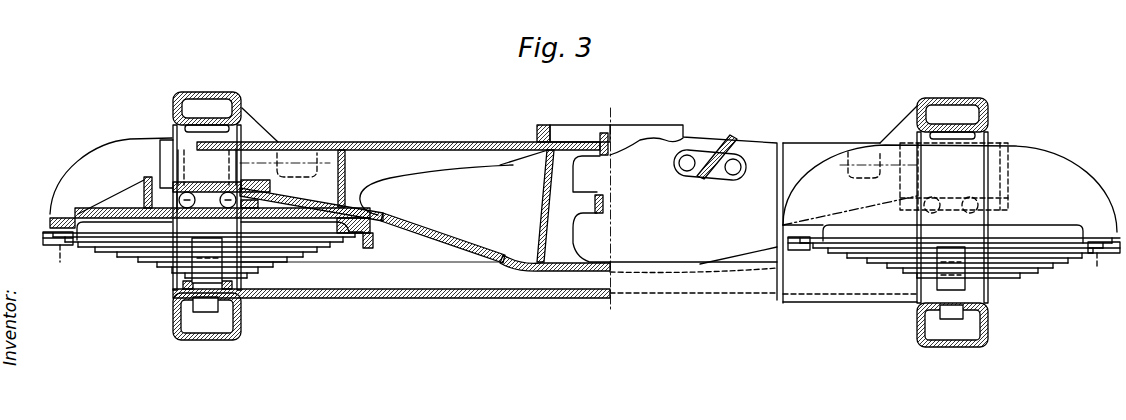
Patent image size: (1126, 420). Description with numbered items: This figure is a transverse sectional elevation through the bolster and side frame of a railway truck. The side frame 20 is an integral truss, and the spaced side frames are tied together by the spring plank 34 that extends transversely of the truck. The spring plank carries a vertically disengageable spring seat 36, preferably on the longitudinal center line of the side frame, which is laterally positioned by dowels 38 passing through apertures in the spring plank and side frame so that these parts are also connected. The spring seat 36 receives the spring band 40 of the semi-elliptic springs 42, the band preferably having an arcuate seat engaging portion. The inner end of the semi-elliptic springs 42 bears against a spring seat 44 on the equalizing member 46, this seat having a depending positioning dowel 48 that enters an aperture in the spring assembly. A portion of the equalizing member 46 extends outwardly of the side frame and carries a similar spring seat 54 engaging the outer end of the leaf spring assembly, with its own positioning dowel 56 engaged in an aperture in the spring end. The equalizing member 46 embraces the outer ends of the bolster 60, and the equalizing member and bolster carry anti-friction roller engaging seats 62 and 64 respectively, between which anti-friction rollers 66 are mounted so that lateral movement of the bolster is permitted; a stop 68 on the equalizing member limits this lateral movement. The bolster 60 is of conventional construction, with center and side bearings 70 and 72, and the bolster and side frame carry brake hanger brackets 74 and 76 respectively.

The side frame 20 is at (213, 93).
The spring plank 34 is at (601, 300).
The spring seat 36 is at (247, 296).
The dowels 38 is at (207, 312).
The spring band 40 is at (200, 263).
The semi-elliptic springs 42 is at (132, 254).
The spring seat 44 is at (377, 232).
The equalizing member 46 is at (117, 145).
The positioning dowel 48 is at (355, 249).
The spring seat 54 is at (65, 219).
The positioning dowel 56 is at (581, 259).
The bolster 60 is at (396, 158).
The anti-friction roller engaging seat 62 is at (172, 223).
The anti-friction roller engaging seat 64 is at (190, 182).
The anti-friction rollers 66 is at (167, 188).
The stop 68 is at (143, 184).
The center bearing 70 is at (549, 125).
The side bearings 72 is at (331, 142).
The brake hanger bracket 74 is at (734, 137).
The brake hanger bracket 76 is at (896, 127).